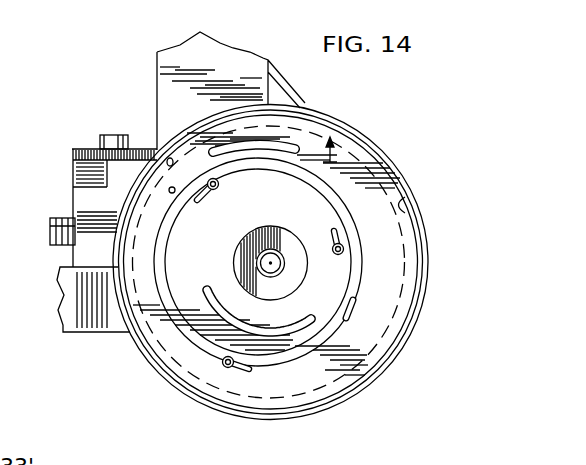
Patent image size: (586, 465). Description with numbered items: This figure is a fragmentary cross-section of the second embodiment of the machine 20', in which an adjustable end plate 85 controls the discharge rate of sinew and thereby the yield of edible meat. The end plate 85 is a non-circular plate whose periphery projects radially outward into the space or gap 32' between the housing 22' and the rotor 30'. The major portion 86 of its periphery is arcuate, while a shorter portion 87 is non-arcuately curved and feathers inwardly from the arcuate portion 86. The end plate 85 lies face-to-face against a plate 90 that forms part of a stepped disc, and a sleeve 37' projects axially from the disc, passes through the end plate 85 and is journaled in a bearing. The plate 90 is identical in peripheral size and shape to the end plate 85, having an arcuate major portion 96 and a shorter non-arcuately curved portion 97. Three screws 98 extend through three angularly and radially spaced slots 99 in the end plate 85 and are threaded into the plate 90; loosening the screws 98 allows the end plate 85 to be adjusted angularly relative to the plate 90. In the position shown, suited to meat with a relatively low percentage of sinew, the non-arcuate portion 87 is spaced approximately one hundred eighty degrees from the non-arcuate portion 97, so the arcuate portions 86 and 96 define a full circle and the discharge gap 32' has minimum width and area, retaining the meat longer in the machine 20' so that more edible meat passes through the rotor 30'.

The machine 20' is at (288, 262).
The housing 22' is at (297, 262).
The rotor 30' is at (275, 173).
The space or gap 32' is at (433, 188).
The sleeve 37' is at (240, 263).
The end plate 85 is at (368, 332).
The major portion of the periphery of the plate 86 is at (350, 137).
The shorter portion 87 is at (72, 149).
The plate 90 is at (302, 379).
The major portion 96 is at (158, 152).
The non-arcuately curved portion 97 is at (293, 425).
The screws 98 is at (218, 190).
The slots 99 is at (182, 322).